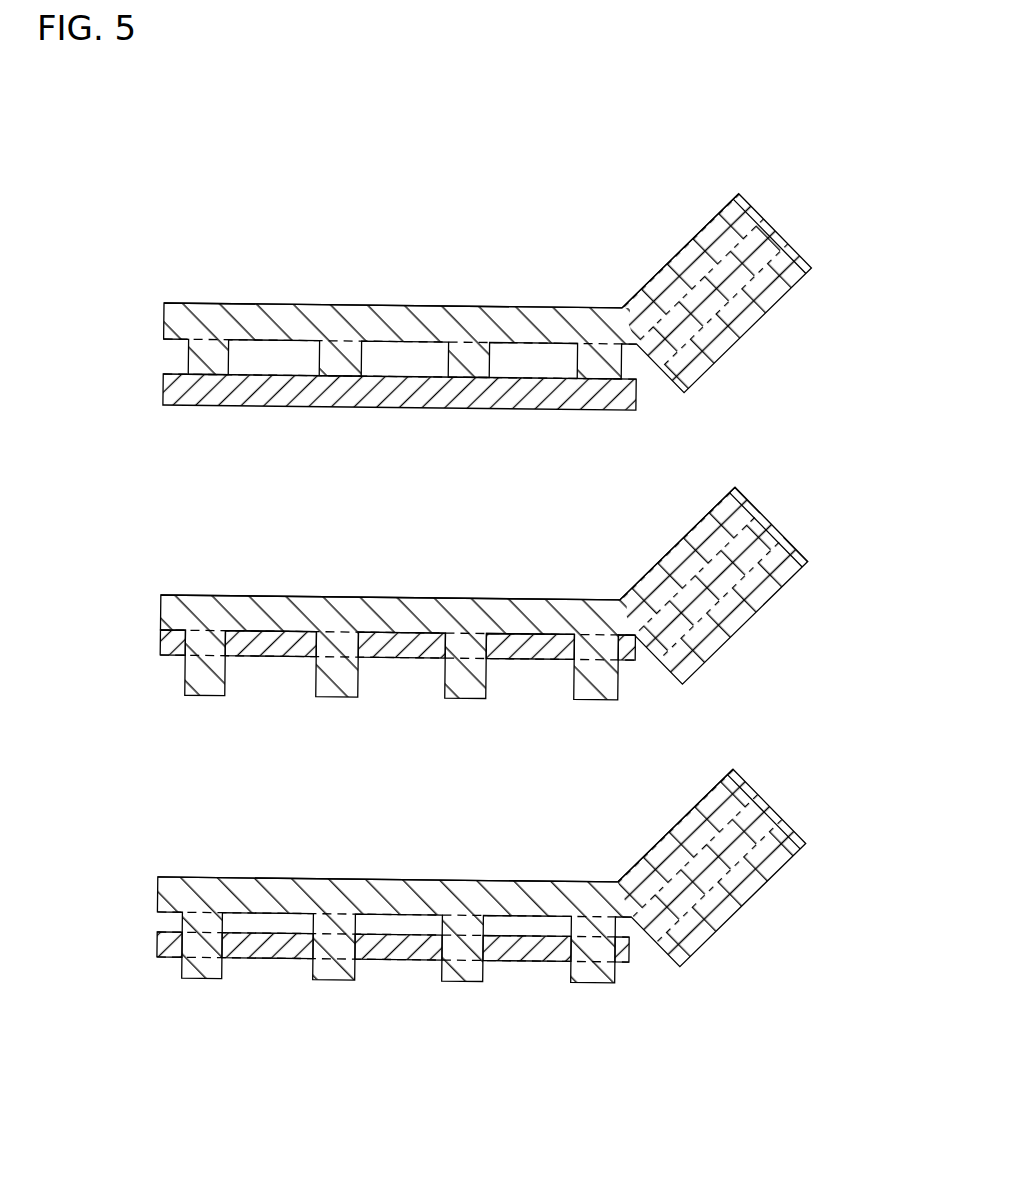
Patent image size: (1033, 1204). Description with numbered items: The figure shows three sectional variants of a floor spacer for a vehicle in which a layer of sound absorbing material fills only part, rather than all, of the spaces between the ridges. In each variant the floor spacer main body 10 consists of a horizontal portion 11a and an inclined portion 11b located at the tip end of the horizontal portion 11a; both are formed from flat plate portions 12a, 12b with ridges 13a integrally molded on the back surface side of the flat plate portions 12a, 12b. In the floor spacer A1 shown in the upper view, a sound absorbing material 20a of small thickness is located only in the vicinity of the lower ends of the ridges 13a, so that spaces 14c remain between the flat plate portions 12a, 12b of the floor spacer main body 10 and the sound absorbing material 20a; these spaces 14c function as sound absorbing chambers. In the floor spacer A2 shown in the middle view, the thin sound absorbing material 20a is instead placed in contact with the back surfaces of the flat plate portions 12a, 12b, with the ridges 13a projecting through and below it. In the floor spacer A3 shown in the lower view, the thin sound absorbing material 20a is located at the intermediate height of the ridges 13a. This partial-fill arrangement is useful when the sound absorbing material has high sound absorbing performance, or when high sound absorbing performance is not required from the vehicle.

The floor spacer main body 10 is at (549, 302).
The horizontal portion 11a is at (195, 302).
The inclined portion 11b is at (693, 232).
The flat plate portion 12a is at (392, 310).
The flat plate portion 12b is at (736, 211).
The ridges 13a is at (213, 388).
The spaces 14c is at (288, 348).
The sound absorbing material 20a is at (806, 255).
The floor spacer for a vehicle A1 is at (276, 264).
The floor spacer for a vehicle A2 is at (275, 576).
The floor spacer for a vehicle A3 is at (298, 860).